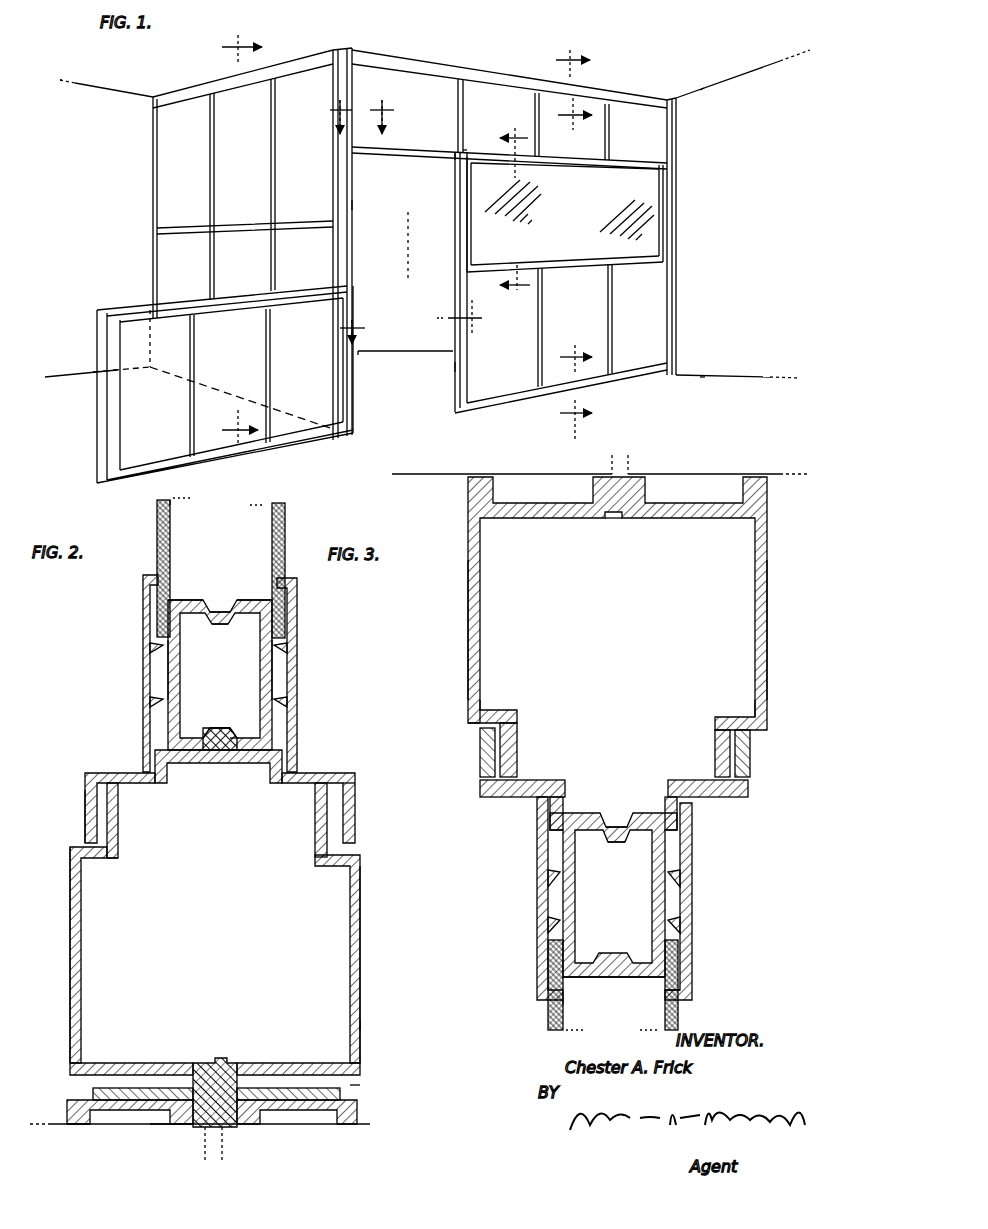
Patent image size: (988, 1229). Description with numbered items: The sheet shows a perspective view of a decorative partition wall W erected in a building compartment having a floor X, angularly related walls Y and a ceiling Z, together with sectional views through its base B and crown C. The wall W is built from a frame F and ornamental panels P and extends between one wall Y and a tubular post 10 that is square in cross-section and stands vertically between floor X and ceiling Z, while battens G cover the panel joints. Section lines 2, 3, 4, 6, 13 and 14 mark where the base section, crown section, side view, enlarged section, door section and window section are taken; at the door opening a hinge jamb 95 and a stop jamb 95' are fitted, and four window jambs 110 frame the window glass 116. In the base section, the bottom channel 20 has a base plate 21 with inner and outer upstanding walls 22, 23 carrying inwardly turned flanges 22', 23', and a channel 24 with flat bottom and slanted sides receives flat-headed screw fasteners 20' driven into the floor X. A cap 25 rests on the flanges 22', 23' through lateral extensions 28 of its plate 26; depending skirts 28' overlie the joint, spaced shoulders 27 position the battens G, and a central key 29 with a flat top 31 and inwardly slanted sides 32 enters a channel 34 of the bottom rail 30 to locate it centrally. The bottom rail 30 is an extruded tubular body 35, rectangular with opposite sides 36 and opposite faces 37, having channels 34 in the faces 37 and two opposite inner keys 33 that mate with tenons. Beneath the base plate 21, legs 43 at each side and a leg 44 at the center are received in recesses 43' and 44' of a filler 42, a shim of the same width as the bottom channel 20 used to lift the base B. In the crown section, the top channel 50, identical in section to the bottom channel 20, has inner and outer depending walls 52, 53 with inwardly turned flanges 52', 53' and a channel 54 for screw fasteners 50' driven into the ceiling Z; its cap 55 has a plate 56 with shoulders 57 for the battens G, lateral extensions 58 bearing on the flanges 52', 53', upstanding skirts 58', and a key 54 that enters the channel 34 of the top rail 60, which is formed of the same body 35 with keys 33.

In FIG. 1, the section line 2— 2 is at (572, 392).
In FIG. 1, the section line 3— 3 is at (568, 85).
In FIG. 1, the section line 4— 4 is at (243, 238).
In FIG. 1, the section line 6— 6 is at (342, 118).
In FIG. 1, the post 10 is at (352, 204).
In FIG. 1, the section line 13 is at (402, 324).
In FIG. 1, the section line 14 is at (513, 210).
In FIG. 1, the hinge jamb 95 is at (381, 381).
In FIG. 1, the stop jamb 95' is at (420, 268).
In FIG. 1, the window jamb 110 is at (656, 184).
In FIG. 1, the window glass 116 is at (565, 214).
In FIG. 2, the bottom channel 20 is at (251, 955).
In FIG. 2, the screw fasteners 20' is at (240, 1143).
In FIG. 2, the base plate 21 is at (147, 1063).
In FIG. 2, the inner upstanding wall 22 is at (382, 964).
In FIG. 2, the inwardly turned flange 22' is at (301, 820).
In FIG. 2, the outer upstanding wall 23 is at (98, 955).
In FIG. 2, the inwardly turned flange 23' is at (126, 835).
In FIG. 2, the channel 24 is at (222, 1062).
In FIG. 2, the cap 25 is at (354, 780).
In FIG. 2, the plate 26 is at (240, 752).
In FIG. 2, the shoulders 27 is at (160, 755).
In FIG. 2, the lateral extensions 28 is at (218, 793).
In FIG. 2, the depending skirt 28' is at (219, 816).
In FIG. 2, the key 29 is at (214, 750).
In FIG. 2, the bottom rail 30 is at (283, 600).
In FIG. 2, the flat top 31 is at (218, 728).
In FIG. 2, the inwardly slanted sides 32 is at (206, 738).
In FIG. 2, the inner keys 33 is at (222, 628).
In FIG. 3, the inner keys 33 is at (630, 843).
In FIG. 2, the channels 34 is at (221, 604).
In FIG. 3, the channels 34 is at (614, 830).
In FIG. 2, the extruded body 35 is at (185, 600).
In FIG. 3, the extruded body 35 is at (682, 964).
In FIG. 2, the opposite sides 36 is at (168, 680).
In FIG. 2, the opposite faces 37 is at (245, 600).
In FIG. 2, the filler 42 is at (364, 1098).
In FIG. 2, the leg 43 is at (214, 1086).
In FIG. 2, the recesses 43' is at (237, 1137).
In FIG. 2, the leg 44 is at (216, 1068).
In FIG. 2, the recess 44' is at (167, 1137).
In FIG. 3, the top channel 50 is at (590, 603).
In FIG. 3, the screw fasteners 50' is at (648, 464).
In FIG. 3, the inner depending wall 52 is at (734, 630).
In FIG. 3, the inwardly turned flange 52' is at (710, 738).
In FIG. 3, the outer depending wall 53 is at (494, 630).
In FIG. 3, the inwardly turned flange 53' is at (520, 738).
In FIG. 3, the channel and key 54 is at (612, 522).
In FIG. 3, the cap 55 is at (496, 797).
In FIG. 3, the plate 56 is at (580, 812).
In FIG. 3, the shoulders 57 is at (550, 820).
In FIG. 3, the lateral extensions 58 is at (673, 772).
In FIG. 3, the upstanding skirts 58' is at (610, 764).
In FIG. 3, the top rail 60 is at (648, 975).
In FIG. 1, the base B is at (292, 450).
In FIG. 2, the base B is at (364, 1024).
In FIG. 1, the crown C is at (332, 56).
In FIG. 3, the crown C is at (466, 732).
In FIG. 1, the frame F is at (432, 155).
In FIG. 2, the frame F is at (210, 572).
In FIG. 3, the frame F is at (587, 998).
In FIG. 1, the batten G is at (270, 175).
In FIG. 2, the batten G is at (140, 638).
In FIG. 3, the batten G is at (536, 848).
In FIG. 1, the panel P is at (175, 184).
In FIG. 2, the panel P is at (290, 515).
In FIG. 3, the panel P is at (546, 1030).
In FIG. 1, the partition wall W is at (172, 264).
In FIG. 1, the floor X is at (706, 382).
In FIG. 2, the floor X is at (398, 1122).
In FIG. 1, the wall Y is at (404, 148).
In FIG. 1, the ceiling Z is at (694, 86).
In FIG. 3, the ceiling Z is at (440, 478).